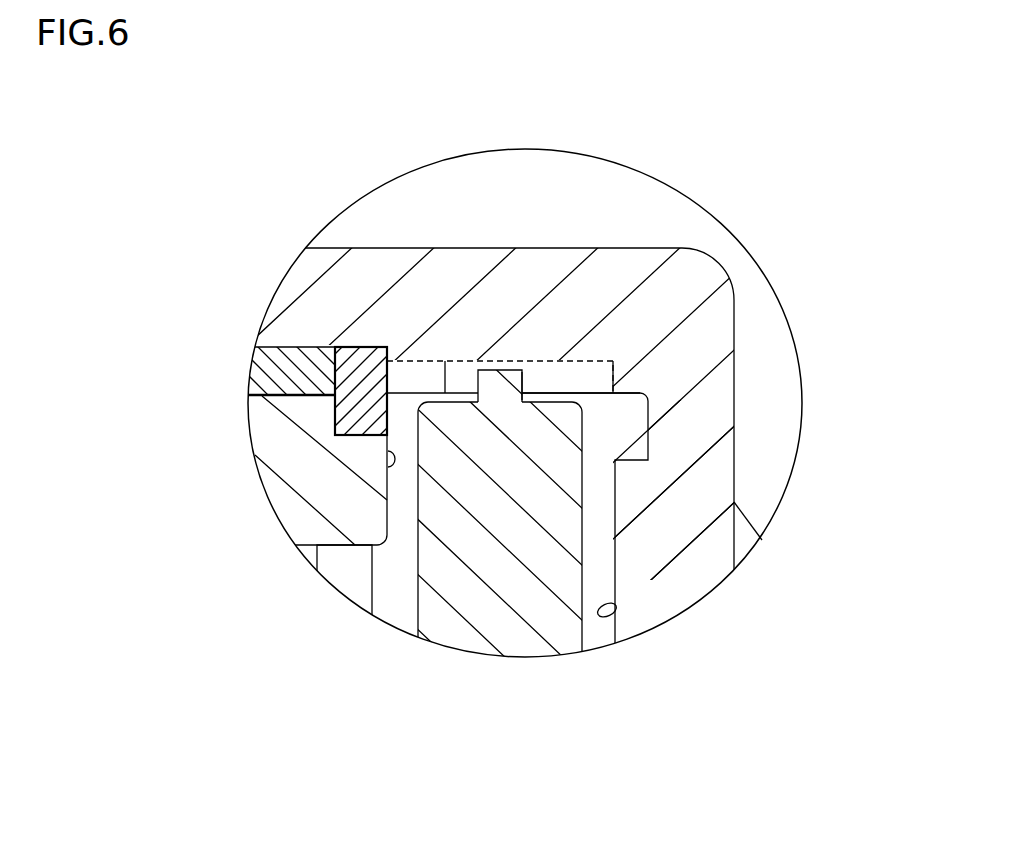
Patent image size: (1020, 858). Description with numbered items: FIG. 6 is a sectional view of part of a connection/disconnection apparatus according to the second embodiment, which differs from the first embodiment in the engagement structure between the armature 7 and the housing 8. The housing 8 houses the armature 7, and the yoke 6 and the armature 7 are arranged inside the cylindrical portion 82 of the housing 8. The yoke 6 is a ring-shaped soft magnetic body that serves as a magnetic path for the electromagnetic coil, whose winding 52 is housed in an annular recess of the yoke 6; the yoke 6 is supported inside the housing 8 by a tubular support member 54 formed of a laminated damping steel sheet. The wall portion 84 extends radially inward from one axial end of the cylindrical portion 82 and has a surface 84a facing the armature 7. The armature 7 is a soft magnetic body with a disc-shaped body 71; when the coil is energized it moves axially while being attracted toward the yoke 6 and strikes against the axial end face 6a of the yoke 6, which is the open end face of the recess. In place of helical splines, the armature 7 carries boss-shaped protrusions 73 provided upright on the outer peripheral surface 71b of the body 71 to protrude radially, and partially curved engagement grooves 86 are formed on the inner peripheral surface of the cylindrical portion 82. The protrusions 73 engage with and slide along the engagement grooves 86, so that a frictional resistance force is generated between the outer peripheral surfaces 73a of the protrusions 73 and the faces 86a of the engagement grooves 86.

The yoke 6 is at (270, 432).
The axial end face of the yoke 6a is at (390, 467).
The armature 7 is at (583, 443).
The housing 8 is at (718, 258).
The winding 52 is at (343, 567).
The support member 54 is at (267, 367).
The body 71 is at (523, 652).
The outer peripheral surface of the body 71b is at (432, 393).
The protrusions 73 is at (505, 367).
The outer peripheral surfaces of the protrusions 73a is at (520, 385).
The cylindrical portion 82 is at (487, 262).
The wall portion 84 is at (690, 497).
The surface of the wall portion 84a is at (627, 600).
The engagement grooves 86 is at (464, 362).
The faces of the engagement grooves 86a is at (558, 385).